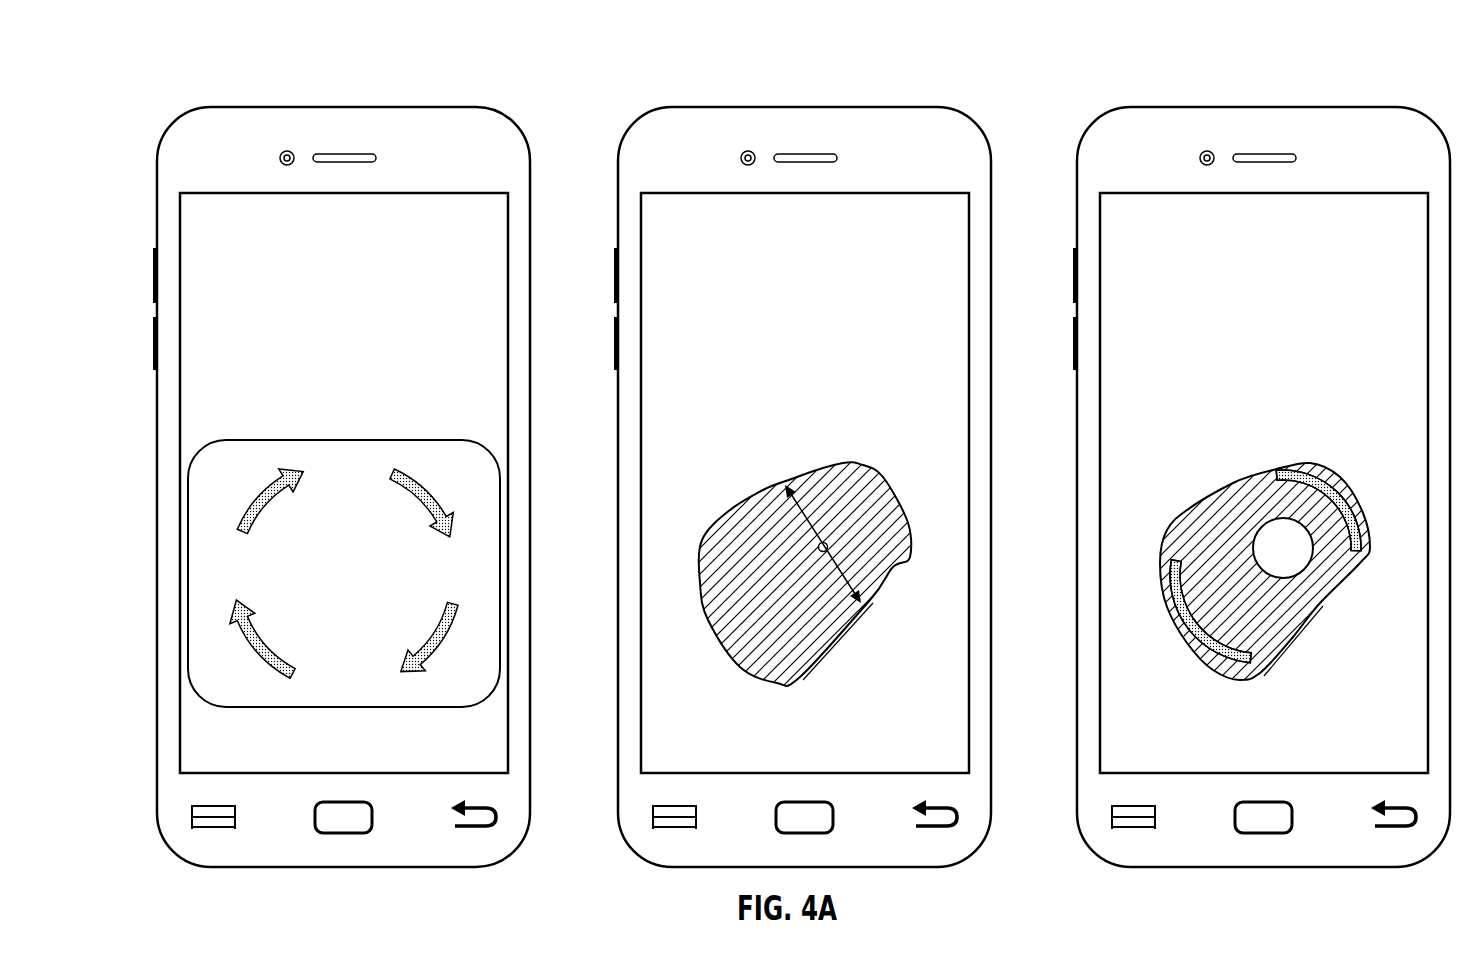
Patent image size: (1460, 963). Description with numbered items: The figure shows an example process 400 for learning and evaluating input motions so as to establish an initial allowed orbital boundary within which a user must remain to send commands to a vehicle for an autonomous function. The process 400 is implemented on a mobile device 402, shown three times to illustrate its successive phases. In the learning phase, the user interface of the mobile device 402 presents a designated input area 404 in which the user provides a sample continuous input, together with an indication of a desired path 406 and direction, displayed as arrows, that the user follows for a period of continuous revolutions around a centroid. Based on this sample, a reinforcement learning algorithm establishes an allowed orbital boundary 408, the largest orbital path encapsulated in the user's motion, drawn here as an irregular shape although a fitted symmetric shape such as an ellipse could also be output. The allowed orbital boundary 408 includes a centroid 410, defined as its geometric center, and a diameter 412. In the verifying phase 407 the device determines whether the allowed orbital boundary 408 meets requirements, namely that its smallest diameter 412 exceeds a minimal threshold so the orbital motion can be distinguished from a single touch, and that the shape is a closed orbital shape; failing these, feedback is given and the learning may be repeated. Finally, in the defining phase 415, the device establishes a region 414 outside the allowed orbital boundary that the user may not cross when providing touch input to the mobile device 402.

The example process 400 is at (158, 70).
The mobile device 402 is at (172, 125).
The designated input area 404 is at (203, 576).
The desired path 406 is at (245, 500).
The verifying phase 407 is at (600, 232).
The allowed orbital boundary 408 is at (733, 543).
The centroid 410 is at (819, 542).
The diameter 412 is at (805, 496).
The region 414 is at (1272, 545).
The defining phase 415 is at (1062, 232).